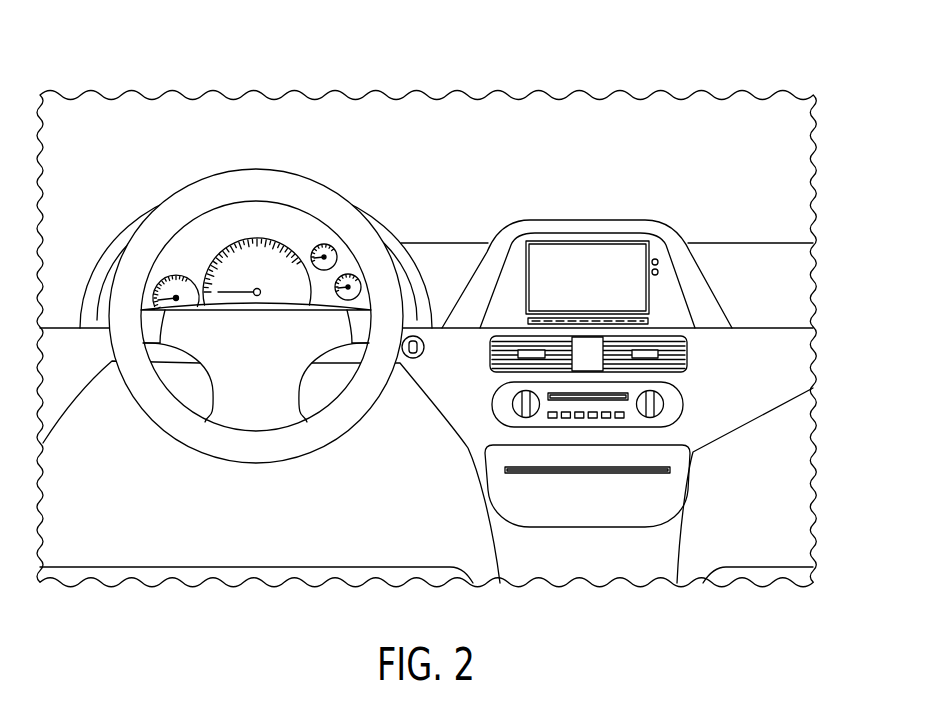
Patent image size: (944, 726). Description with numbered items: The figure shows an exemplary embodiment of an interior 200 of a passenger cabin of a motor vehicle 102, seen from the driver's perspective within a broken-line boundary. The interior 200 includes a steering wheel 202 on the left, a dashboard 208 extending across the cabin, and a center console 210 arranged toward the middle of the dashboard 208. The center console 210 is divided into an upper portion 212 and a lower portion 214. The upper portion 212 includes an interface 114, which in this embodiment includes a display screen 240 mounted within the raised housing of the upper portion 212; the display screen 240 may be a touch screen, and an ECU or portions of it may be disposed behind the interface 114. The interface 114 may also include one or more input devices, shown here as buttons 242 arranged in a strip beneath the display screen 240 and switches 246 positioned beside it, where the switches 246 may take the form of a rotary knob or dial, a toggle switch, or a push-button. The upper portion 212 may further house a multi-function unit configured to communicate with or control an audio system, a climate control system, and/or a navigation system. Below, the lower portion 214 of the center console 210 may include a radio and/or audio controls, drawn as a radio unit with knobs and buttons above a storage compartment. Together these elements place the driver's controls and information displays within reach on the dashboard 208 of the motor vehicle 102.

The motor vehicle 102 is at (444, 72).
The interior 200 is at (646, 128).
The steering wheel 202 is at (303, 187).
The interface 114 is at (530, 252).
The display screen 240 is at (548, 247).
The upper portion 212 is at (688, 253).
The switches 246 is at (663, 265).
The buttons 242 is at (645, 321).
The dashboard 208 is at (792, 285).
The center console 210 is at (700, 353).
The lower portion 214 is at (726, 406).